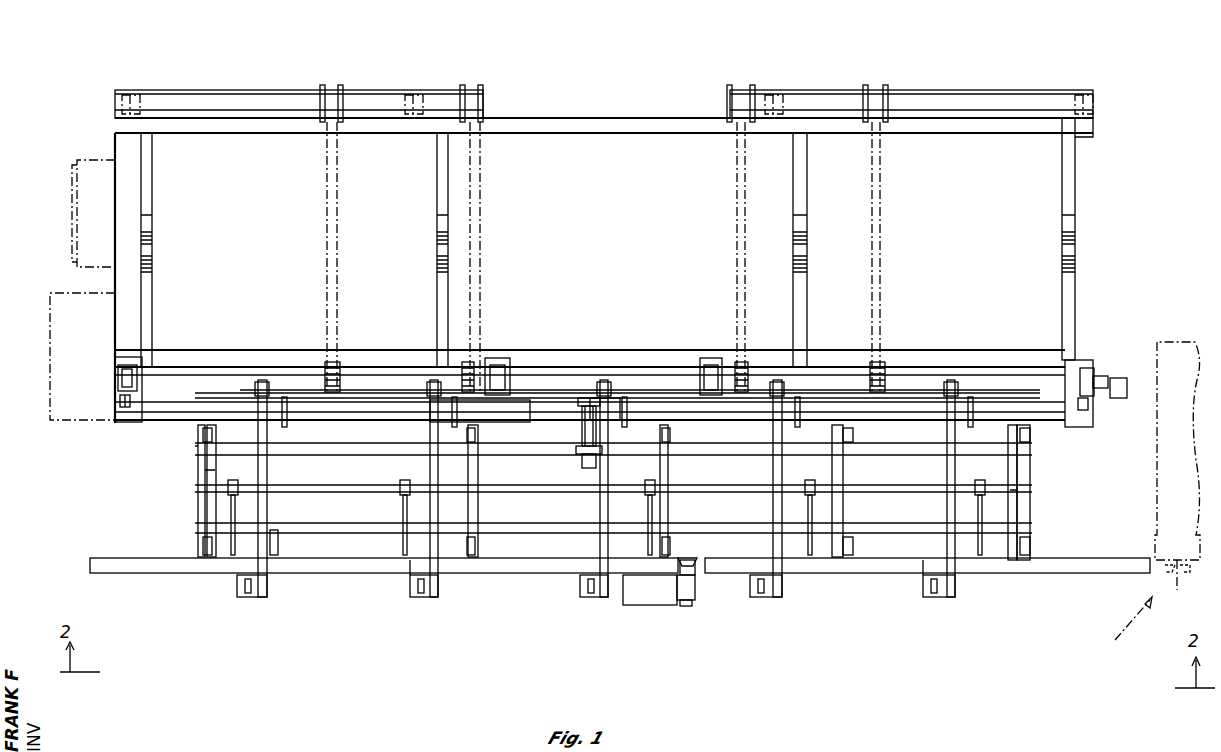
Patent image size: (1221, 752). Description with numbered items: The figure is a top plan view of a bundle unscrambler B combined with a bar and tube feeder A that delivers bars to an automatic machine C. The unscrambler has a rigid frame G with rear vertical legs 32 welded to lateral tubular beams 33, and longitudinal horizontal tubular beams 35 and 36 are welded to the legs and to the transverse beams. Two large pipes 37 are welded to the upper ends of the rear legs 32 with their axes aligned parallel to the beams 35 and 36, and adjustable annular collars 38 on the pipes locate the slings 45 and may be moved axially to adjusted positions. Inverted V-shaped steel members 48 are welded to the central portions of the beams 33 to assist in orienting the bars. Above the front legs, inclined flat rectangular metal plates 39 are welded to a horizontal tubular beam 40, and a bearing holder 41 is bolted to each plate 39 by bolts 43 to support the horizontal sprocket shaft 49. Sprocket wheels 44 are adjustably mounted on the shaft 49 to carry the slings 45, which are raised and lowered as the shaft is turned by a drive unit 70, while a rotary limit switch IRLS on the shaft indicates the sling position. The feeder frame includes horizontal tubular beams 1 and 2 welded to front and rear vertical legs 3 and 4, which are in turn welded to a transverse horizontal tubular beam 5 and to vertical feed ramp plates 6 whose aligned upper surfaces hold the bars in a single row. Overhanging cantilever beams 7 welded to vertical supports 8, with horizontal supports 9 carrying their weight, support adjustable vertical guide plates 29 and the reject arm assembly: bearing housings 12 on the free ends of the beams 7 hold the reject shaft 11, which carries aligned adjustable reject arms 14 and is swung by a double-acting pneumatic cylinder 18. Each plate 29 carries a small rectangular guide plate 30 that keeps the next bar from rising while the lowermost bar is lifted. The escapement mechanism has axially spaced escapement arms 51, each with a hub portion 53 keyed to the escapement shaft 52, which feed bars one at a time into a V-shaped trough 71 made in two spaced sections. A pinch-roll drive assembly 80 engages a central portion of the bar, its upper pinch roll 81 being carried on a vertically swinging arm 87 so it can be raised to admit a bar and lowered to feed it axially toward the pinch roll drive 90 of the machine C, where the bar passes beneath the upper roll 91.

The horizontal tubular beam 1 is at (543, 533).
The horizontal tubular beam 2 is at (372, 443).
The front vertical leg 3 is at (203, 545).
The rear vertical leg 4 is at (203, 435).
The transverse horizontal tubular beam 5 is at (210, 465).
The vertical feed ramp plate 6 is at (198, 500).
The cantilever beam 7 is at (258, 434).
The vertical support 8 is at (252, 597).
The horizontal support 9 is at (410, 580).
The reject shaft 11 is at (278, 388).
The bearing housing 12 is at (428, 383).
The reject arm 14 is at (624, 397).
The double-acting pneumatic cylinder 18 is at (582, 440).
The adjustable vertical guide plate 29 is at (275, 508).
The rectangular guide plate 30 is at (278, 544).
The rear vertical leg 32 is at (128, 95).
The lateral tubular beam 33 is at (152, 164).
The longitudinal horizontal tubular beam 35 is at (556, 366).
The longitudinal horizontal tubular beam 36 is at (115, 124).
The pipe 37 is at (205, 90).
The adjustable annular collar 38 is at (341, 85).
The flat rectangular metal plate 39 is at (128, 357).
The horizontal tubular beam 40 is at (162, 418).
The bearing holder 41 is at (118, 362).
The bolt 43 is at (118, 400).
The sprocket wheel 44 is at (325, 366).
The sling 45 is at (327, 186).
The inverted V-shaped steel member 48 is at (152, 262).
The sprocket shaft 49 is at (172, 366).
The escapement arm 51 is at (228, 510).
The escapement shaft 52 is at (312, 492).
The hub portion 53 is at (645, 490).
The drive unit 70 is at (50, 356).
The trough 71 is at (153, 573).
The pinch-roll drive assembly 80 is at (658, 612).
The upper pinch roll 81 is at (697, 568).
The vertically swinging arm 87 is at (686, 600).
The pinch roll drive 90 is at (1119, 620).
The upper roll 91 is at (1177, 588).
The bar and tube feeder A is at (195, 477).
The unscrambler B is at (608, 115).
The automatic machine C is at (1180, 345).
The frame G is at (1093, 130).
The rotary limit switch IRLS is at (1122, 378).